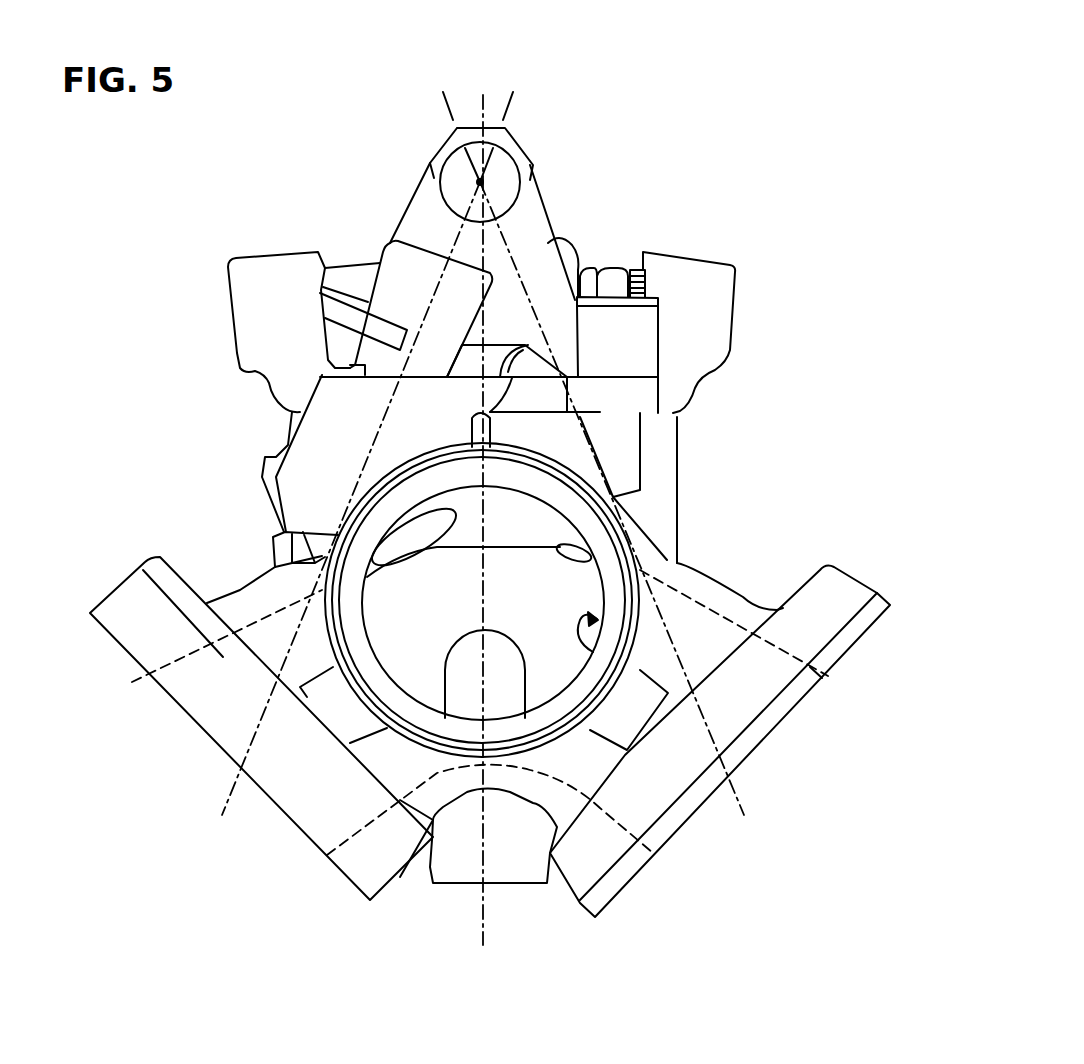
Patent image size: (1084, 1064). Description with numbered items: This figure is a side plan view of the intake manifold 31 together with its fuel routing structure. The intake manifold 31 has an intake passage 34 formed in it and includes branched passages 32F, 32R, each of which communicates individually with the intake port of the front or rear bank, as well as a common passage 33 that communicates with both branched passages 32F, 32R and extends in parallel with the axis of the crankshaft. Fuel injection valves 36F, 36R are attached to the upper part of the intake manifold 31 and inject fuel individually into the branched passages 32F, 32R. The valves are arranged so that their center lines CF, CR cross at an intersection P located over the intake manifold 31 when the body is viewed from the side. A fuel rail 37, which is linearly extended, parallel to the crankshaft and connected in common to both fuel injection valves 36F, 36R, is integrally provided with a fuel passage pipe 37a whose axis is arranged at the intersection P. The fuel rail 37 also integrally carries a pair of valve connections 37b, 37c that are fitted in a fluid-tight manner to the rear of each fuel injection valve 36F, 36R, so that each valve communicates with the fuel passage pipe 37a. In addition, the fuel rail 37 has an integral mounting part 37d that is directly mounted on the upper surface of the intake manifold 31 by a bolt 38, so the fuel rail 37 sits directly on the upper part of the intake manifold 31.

The intersection P is at (517, 187).
The fuel rail 37 is at (545, 203).
The fuel passage pipe 37a is at (427, 193).
The valve connection 37b is at (403, 257).
The valve connection 37c is at (565, 253).
The mounting part 37d is at (633, 335).
The bolt 38 is at (618, 283).
The fuel injection valve 36F is at (250, 355).
The fuel injection valve 36R is at (710, 350).
The common passage 33 is at (613, 487).
The intake manifold 31 is at (700, 590).
The branched passage 32F is at (410, 793).
The branched passage 32R is at (735, 625).
The intake passage 34 is at (655, 695).
The center line CF is at (262, 720).
The center line CR is at (752, 712).